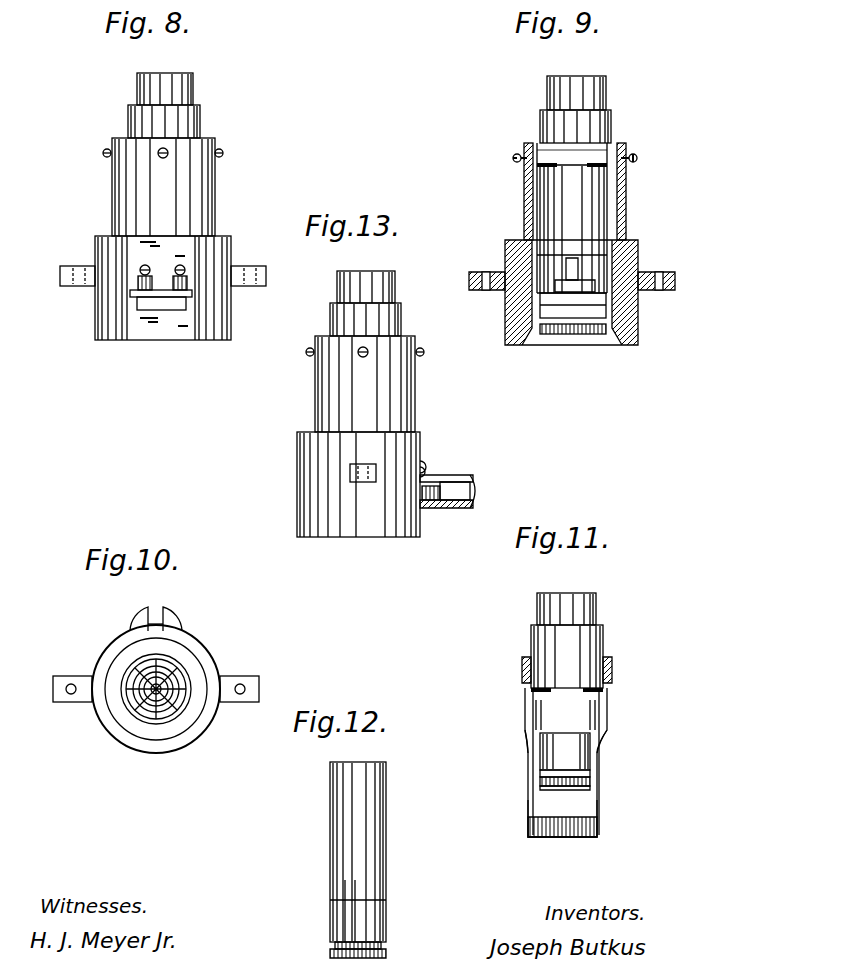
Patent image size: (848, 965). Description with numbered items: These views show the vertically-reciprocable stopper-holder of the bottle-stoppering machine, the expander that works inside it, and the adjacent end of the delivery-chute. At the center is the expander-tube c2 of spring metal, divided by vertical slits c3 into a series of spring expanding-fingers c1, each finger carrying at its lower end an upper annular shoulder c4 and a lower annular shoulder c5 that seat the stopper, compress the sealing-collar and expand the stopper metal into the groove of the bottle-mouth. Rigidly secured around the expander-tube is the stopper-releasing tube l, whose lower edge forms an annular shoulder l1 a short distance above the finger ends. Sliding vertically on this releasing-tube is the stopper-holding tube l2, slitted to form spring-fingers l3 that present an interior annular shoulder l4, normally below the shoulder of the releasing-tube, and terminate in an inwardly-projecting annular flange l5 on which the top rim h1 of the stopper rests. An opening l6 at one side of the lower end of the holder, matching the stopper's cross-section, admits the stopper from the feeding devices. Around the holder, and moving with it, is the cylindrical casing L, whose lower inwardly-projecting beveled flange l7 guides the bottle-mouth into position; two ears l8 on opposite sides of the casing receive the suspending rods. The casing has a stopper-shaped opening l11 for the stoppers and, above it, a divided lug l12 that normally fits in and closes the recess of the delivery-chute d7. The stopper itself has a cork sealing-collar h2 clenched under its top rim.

In FIG. 8, the expander-tube c2 is at (196, 89).
In FIG. 9, the expander-tube c2 is at (607, 94).
In FIG. 13, the expander-tube c2 is at (396, 292).
In FIG. 11, the expander-tube c2 is at (597, 607).
In FIG. 12, the expander-tube c2 is at (387, 806).
In FIG. 8, the stopper-releasing tube l is at (202, 124).
In FIG. 9, the stopper-releasing tube l is at (612, 130).
In FIG. 13, the stopper-releasing tube l is at (402, 322).
In FIG. 11, the stopper-releasing tube l is at (604, 645).
In FIG. 8, the cylindrical casing L is at (216, 194).
In FIG. 9, the cylindrical casing L is at (627, 192).
In FIG. 13, the cylindrical casing L is at (416, 387).
In FIG. 10, the cylindrical casing L is at (107, 646).
In FIG. 8, the ears l8 is at (252, 267).
In FIG. 9, the ears l8 is at (700, 281).
In FIG. 13, the ears l8 is at (350, 474).
In FIG. 10, the ears l8 is at (278, 684).
In FIG. 8, the divided lug l12 is at (138, 281).
In FIG. 13, the divided lug l12 is at (435, 474).
In FIG. 10, the divided lug l12 is at (180, 618).
In FIG. 8, the stopper-shaped opening l11 is at (163, 303).
In FIG. 9, the stopper-holding tube l2 is at (525, 152).
In FIG. 11, the stopper-holding tube l2 is at (612, 676).
In FIG. 9, the spring-fingers l3 is at (607, 261).
In FIG. 10, the spring-fingers l3 is at (181, 672).
In FIG. 11, the spring-fingers l3 is at (597, 811).
In FIG. 9, the inwardly-projecting annular flange l5 is at (568, 297).
In FIG. 11, the inwardly-projecting annular flange l5 is at (533, 820).
In FIG. 9, the opening l6 is at (580, 306).
In FIG. 9, the inwardly-projecting beveled flange l7 is at (597, 334).
In FIG. 13, the stopper-delivery chute d7 is at (477, 486).
In FIG. 13, the top rim of stopper h1 is at (472, 494).
In FIG. 13, the cork sealing-collar h2 is at (440, 508).
In FIG. 10, the expanding-fingers c1 is at (178, 687).
In FIG. 11, the expanding-fingers c1 is at (580, 742).
In FIG. 12, the expanding-fingers c1 is at (387, 909).
In FIG. 11, the annular shoulder l1 is at (540, 738).
In FIG. 11, the interior annular shoulder l4 is at (665, 745).
In FIG. 11, the vertical slits c3 is at (590, 764).
In FIG. 12, the vertical slits c3 is at (330, 897).
In FIG. 11, the upper annular shoulder c4 is at (591, 778).
In FIG. 12, the upper annular shoulder c4 is at (382, 945).
In FIG. 11, the lower annular shoulder c5 is at (585, 787).
In FIG. 12, the lower annular shoulder c5 is at (386, 954).